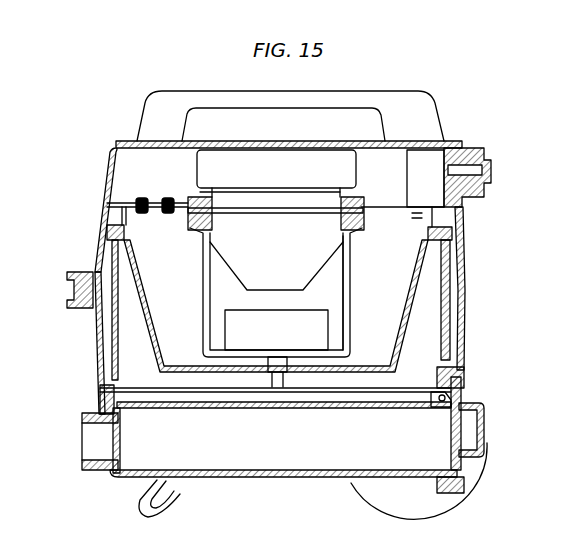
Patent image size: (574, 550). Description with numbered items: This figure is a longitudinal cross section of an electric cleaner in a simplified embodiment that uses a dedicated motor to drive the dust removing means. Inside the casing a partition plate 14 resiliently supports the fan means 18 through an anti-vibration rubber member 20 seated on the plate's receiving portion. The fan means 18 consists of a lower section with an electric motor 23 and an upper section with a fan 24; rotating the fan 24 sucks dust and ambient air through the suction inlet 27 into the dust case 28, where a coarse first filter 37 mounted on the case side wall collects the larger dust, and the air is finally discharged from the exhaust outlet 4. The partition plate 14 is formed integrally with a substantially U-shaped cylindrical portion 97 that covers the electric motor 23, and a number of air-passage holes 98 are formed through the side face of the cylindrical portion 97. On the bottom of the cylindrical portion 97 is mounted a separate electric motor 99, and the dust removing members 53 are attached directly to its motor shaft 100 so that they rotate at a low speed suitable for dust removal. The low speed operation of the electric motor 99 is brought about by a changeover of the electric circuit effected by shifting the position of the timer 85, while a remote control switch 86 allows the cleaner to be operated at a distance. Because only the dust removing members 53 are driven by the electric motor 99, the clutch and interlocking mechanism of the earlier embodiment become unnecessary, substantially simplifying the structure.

The exhaust outlet 4 is at (92, 326).
The partition plate 14 is at (157, 201).
The fan means 18 is at (228, 149).
The anti-vibration rubber member 20 is at (194, 223).
The electric motor 23 is at (323, 248).
The fan 24 is at (272, 162).
The suction inlet 27 is at (88, 443).
The dust case 28 is at (277, 467).
The first filter 37 is at (173, 410).
The dust removing members 53 is at (147, 313).
The timer 85 is at (426, 156).
The remote control switch 86 is at (317, 396).
The cylindrical portion 97 is at (348, 267).
The air-passage holes 98 is at (348, 313).
The electric motor 99 is at (317, 333).
The motor shaft 100 is at (262, 366).